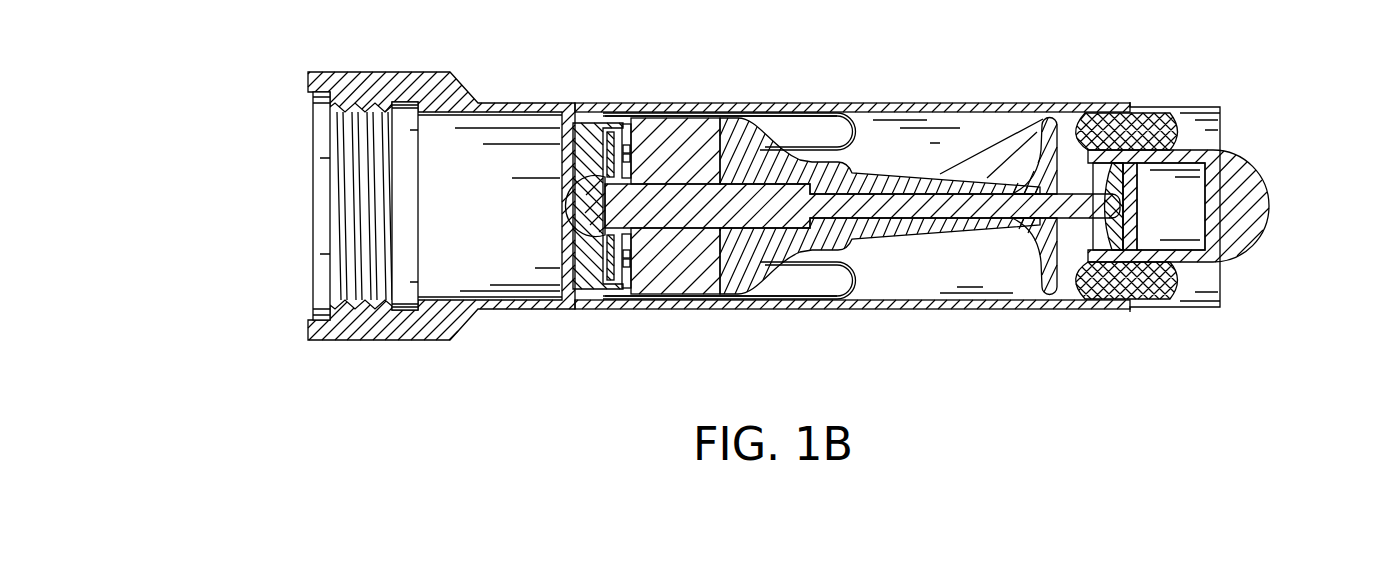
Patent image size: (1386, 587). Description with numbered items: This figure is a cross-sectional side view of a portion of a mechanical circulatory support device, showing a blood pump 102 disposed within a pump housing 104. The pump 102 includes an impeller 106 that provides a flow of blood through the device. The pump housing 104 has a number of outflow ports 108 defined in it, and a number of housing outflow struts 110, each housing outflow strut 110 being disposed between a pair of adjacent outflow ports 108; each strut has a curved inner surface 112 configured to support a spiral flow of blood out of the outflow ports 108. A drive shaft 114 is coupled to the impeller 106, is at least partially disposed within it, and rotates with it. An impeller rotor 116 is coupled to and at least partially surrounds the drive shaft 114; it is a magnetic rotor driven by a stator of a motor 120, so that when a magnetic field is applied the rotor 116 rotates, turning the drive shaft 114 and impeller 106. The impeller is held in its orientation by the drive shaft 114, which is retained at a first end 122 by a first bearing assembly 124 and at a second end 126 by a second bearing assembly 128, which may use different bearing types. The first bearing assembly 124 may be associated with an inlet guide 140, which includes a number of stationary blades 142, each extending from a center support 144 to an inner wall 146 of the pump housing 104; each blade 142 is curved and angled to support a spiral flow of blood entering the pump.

The blood pump 102 is at (816, 209).
The pump housing 104 is at (889, 102).
The impeller 106 is at (1012, 142).
The outflow ports 108 is at (830, 122).
The housing outflow struts 110 is at (798, 160).
The curved inner surface 112 is at (832, 250).
The drive shaft 114 is at (923, 206).
The impeller rotor 116 is at (681, 138).
The motor 120 is at (512, 112).
The first end 122 is at (1114, 190).
The first bearing assembly 124 is at (1130, 226).
The second end 126 is at (600, 176).
The second bearing assembly 128 is at (585, 292).
The inlet guide 140 is at (1200, 209).
The stationary blades 142 is at (1158, 128).
The center support 144 is at (1265, 207).
The inner wall 146 is at (1207, 300).